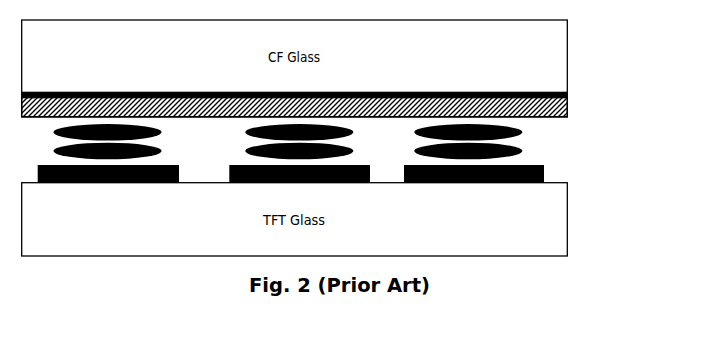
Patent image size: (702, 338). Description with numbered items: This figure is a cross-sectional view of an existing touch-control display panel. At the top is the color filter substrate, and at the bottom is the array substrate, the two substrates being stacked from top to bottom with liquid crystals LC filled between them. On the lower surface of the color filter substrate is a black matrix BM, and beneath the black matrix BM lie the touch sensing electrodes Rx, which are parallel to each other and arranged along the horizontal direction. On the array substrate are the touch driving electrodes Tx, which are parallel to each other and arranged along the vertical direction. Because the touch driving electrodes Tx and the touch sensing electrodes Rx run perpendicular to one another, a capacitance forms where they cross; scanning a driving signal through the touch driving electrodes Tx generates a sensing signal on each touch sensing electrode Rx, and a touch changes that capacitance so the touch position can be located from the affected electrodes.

The black matrix BM is at (567, 93).
The touch sensing electrode Rx is at (567, 105).
The liquid crystal LC is at (515, 130).
The touch driving electrode Tx is at (544, 174).